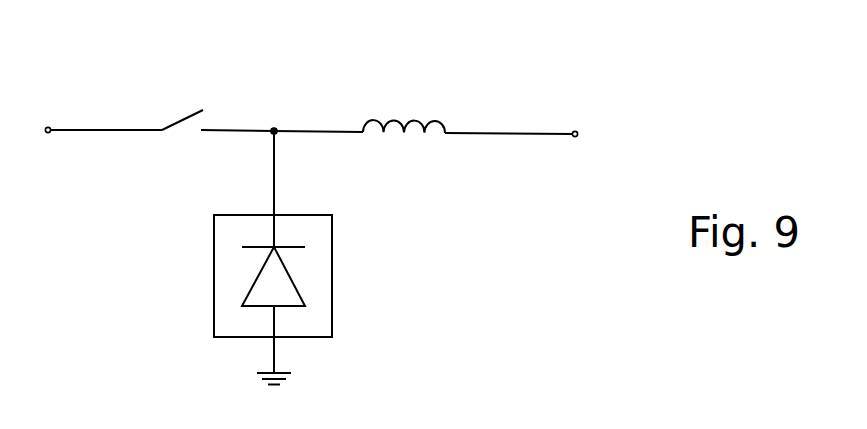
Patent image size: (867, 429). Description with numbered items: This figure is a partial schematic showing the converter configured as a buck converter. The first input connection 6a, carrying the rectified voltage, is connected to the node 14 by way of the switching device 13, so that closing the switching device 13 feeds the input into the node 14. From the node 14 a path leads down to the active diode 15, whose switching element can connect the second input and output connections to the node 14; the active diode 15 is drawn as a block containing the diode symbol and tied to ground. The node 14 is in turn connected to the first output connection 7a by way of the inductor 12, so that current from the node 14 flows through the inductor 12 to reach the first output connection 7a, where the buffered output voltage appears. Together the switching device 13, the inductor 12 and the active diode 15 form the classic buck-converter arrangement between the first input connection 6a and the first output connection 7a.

The first input connection 6a is at (48, 134).
The switching device 13 is at (152, 103).
The node 14 is at (277, 134).
The inductor 12 is at (420, 163).
The first output connection 7a is at (580, 128).
The active diode 15 is at (323, 285).